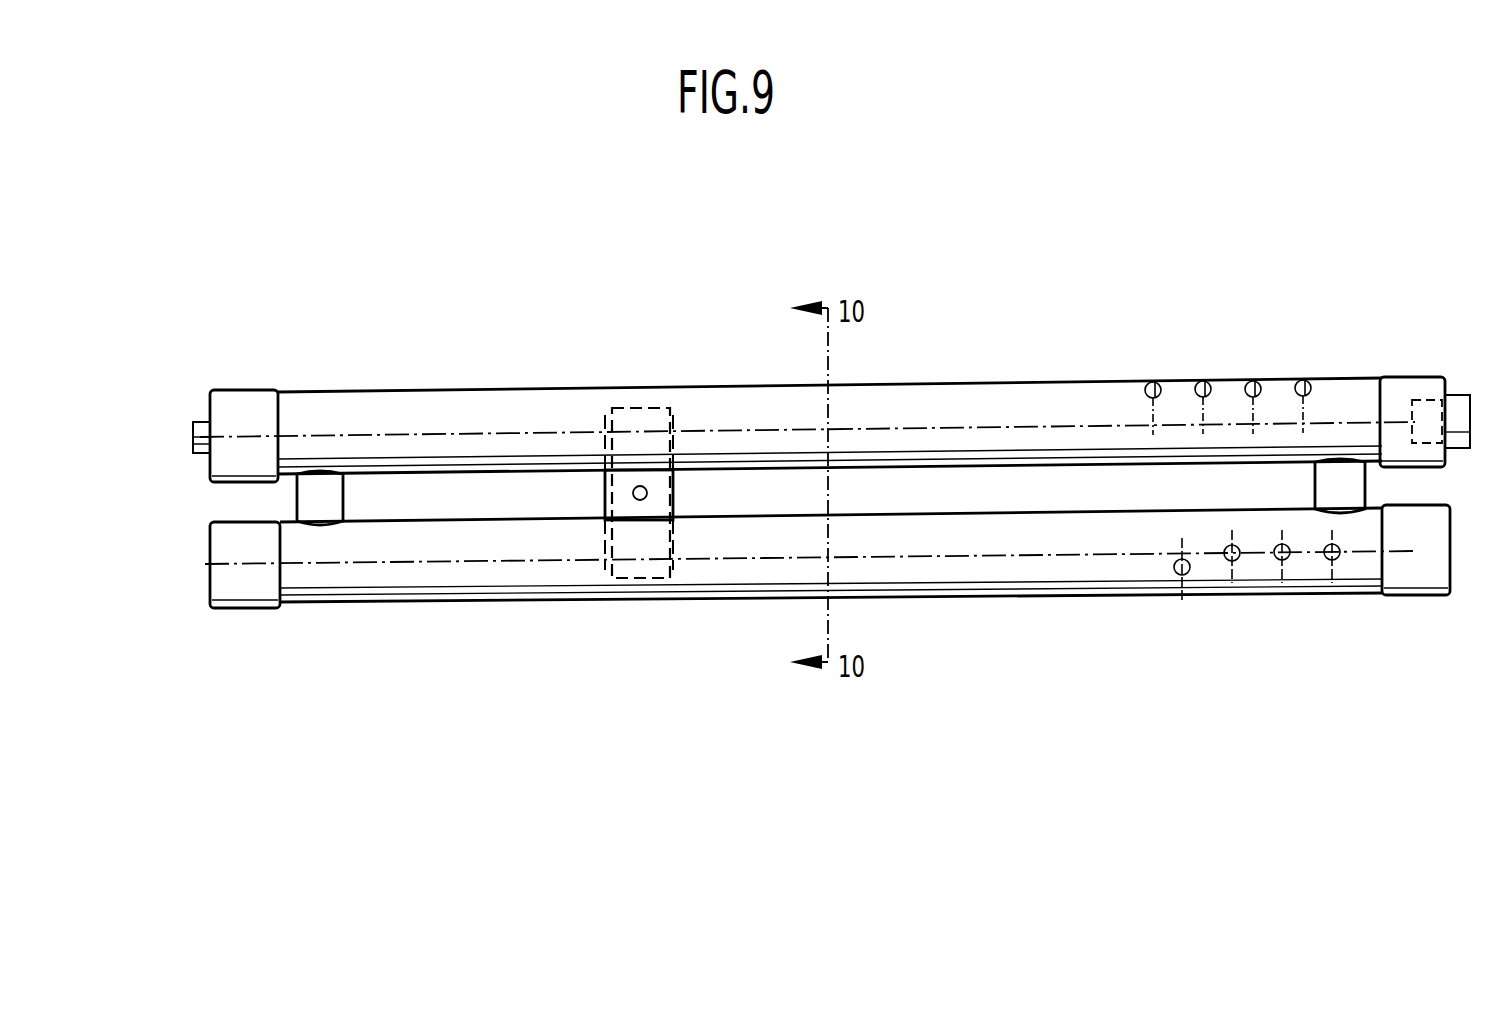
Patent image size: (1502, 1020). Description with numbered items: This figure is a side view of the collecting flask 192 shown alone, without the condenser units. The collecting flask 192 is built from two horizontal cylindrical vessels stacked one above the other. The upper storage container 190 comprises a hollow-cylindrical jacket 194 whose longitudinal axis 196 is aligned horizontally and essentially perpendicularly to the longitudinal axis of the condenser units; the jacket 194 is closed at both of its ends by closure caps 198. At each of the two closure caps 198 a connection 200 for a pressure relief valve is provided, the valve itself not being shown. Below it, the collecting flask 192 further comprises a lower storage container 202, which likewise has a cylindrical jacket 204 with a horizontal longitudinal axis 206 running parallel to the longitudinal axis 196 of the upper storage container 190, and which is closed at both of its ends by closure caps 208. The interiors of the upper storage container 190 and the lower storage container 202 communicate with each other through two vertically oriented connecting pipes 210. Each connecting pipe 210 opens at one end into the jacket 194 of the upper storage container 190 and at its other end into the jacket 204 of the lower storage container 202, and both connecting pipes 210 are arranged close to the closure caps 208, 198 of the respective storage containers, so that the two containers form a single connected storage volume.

The upper storage container 190 is at (1009, 398).
The collecting flask 192 is at (922, 370).
The hollow-cylindrical jacket 194 is at (525, 403).
The longitudinal axis 196 is at (464, 430).
The closure caps 198 is at (252, 398).
The connection for a pressure relief valve 200 is at (186, 432).
The lower storage container 202 is at (1092, 575).
The cylindrical jacket 204 is at (687, 585).
The horizontal longitudinal axis 206 is at (943, 557).
The closure caps 208 is at (255, 582).
The connecting pipes 210 is at (317, 488).